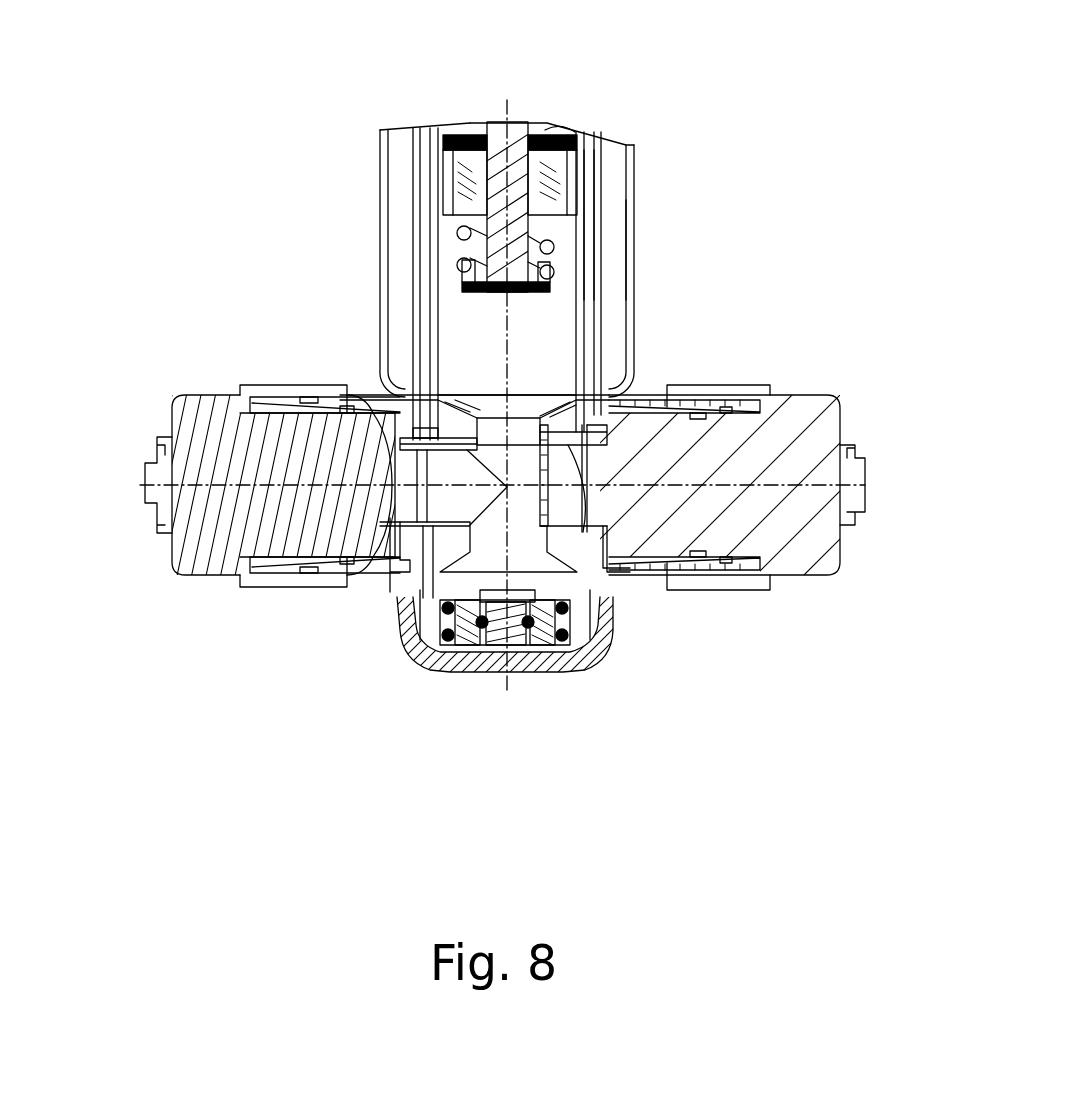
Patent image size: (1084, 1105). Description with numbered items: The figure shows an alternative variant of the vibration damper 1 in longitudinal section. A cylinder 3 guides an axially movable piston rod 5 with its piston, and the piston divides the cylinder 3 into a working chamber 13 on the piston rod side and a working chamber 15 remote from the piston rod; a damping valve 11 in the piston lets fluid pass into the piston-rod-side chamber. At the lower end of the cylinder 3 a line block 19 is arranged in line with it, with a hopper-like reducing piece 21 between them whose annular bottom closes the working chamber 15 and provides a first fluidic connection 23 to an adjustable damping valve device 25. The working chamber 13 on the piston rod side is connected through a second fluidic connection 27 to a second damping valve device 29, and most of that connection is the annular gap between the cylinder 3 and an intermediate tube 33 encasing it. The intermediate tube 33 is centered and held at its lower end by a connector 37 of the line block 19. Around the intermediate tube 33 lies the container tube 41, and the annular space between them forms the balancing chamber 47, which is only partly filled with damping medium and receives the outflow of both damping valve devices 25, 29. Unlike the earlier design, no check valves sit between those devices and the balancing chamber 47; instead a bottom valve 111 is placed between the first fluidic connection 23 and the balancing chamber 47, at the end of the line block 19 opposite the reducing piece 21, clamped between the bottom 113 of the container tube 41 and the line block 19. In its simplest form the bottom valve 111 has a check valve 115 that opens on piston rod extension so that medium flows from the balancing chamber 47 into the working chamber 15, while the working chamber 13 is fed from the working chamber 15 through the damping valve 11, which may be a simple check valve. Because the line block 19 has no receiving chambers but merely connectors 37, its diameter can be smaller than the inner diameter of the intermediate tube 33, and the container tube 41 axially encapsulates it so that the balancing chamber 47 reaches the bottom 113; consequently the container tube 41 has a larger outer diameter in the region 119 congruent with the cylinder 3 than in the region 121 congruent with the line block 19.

The vibration damper 1 is at (705, 667).
The cylinder 3 is at (590, 218).
The piston rod 5 is at (515, 145).
The damping valve 11 is at (572, 122).
The working chamber on the piston rod side 13 is at (452, 125).
The working chamber remote from the piston rod 15 is at (547, 305).
The line block 19 is at (398, 640).
The reducing piece 21 is at (460, 395).
The first fluidic connection 23 is at (500, 402).
The adjustable damping valve device 25 is at (312, 608).
The second fluidic connection 27 is at (602, 212).
The second damping valve device 29 is at (785, 598).
The intermediate tube 33 is at (612, 130).
The connector 37 is at (556, 585).
The container tube 41 is at (630, 248).
The balancing chamber 47 is at (610, 233).
The bottom valve 111 is at (620, 535).
The bottom 113 is at (528, 663).
The check valve 115 is at (430, 657).
The region congruent with the cylinder 119 is at (388, 103).
The region congruent with the line block 121 is at (445, 530).